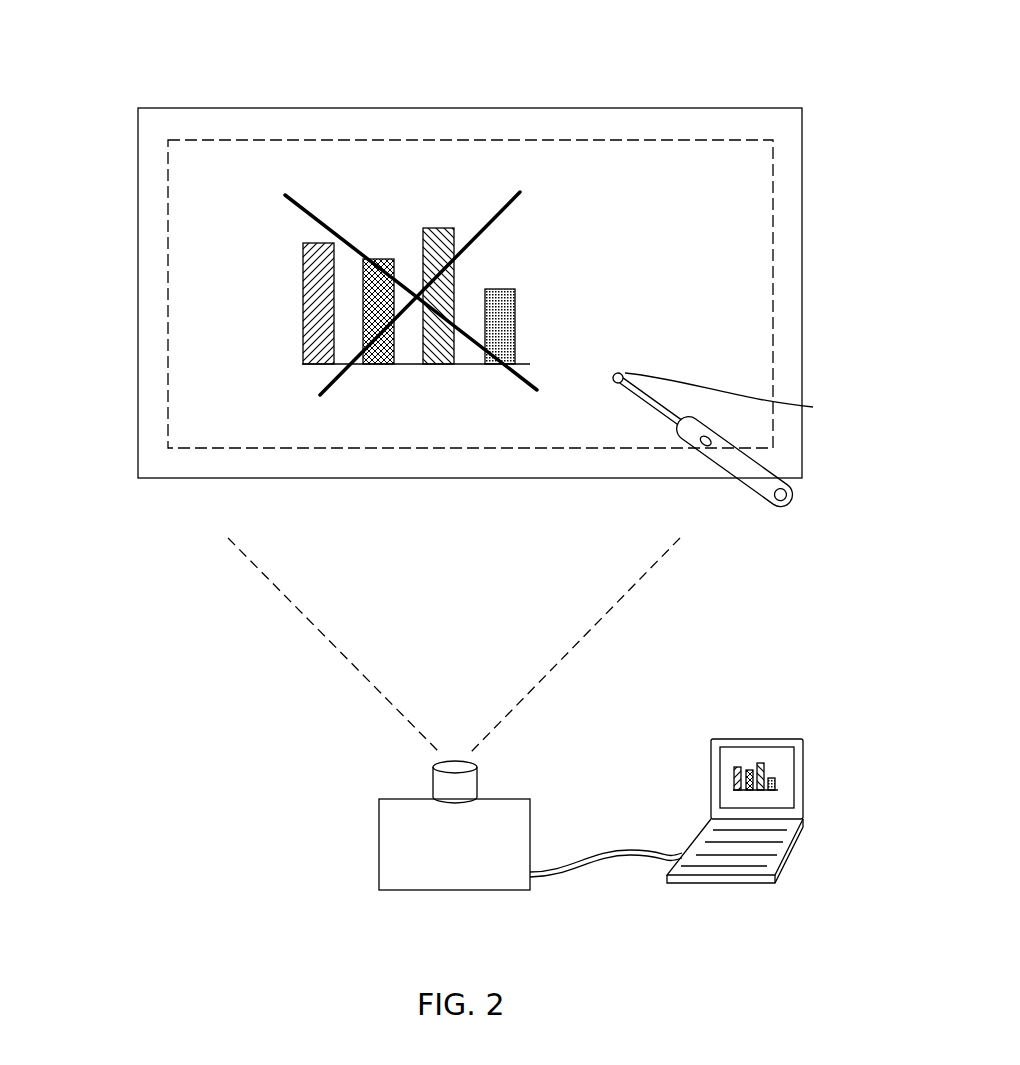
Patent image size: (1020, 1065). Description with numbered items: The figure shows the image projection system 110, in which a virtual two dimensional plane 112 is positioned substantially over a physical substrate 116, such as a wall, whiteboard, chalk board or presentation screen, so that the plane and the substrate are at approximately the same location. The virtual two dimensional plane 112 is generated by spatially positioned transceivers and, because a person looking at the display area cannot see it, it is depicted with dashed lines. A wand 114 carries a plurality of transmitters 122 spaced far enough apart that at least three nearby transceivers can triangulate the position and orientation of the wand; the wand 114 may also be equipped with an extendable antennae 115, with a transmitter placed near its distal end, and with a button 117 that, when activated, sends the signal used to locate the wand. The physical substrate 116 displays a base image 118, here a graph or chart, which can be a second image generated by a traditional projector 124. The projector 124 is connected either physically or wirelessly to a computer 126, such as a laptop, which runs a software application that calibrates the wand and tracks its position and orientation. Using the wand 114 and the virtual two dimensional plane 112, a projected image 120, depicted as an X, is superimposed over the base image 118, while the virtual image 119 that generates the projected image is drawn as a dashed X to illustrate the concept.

The system 110 is at (136, 82).
The virtual two dimensional plane 112 is at (520, 140).
The wand 114 is at (745, 465).
The antennae 115 is at (640, 400).
The physical substrate 116 is at (353, 108).
The pointer button 117 is at (700, 450).
The base image 118 is at (497, 328).
The virtual image 119 is at (393, 357).
The projected image 120 is at (343, 371).
The transmitters 122 is at (781, 478).
The projector 124 is at (470, 854).
The computer 126 is at (750, 845).